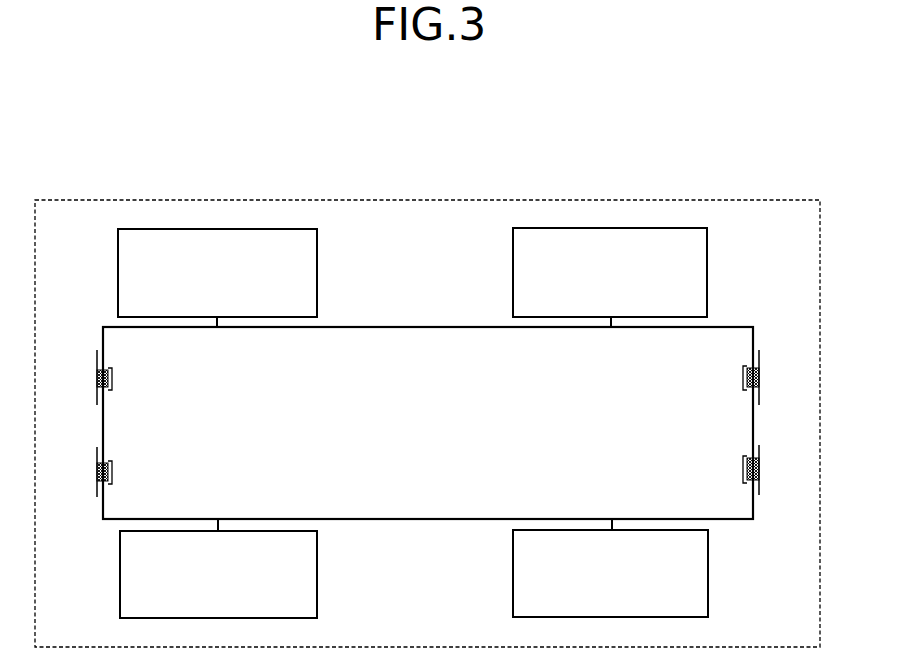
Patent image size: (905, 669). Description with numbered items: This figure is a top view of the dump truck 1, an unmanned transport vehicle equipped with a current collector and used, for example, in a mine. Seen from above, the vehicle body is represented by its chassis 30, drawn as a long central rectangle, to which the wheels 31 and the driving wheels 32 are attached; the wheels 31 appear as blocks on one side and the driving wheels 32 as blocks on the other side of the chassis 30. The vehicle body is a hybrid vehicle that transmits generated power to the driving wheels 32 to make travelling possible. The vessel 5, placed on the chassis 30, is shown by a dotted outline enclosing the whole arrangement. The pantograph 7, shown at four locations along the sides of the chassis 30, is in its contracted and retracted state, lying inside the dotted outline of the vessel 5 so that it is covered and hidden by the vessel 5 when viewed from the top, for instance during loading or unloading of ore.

The dump truck 1 is at (581, 147).
The vessel 5 is at (724, 199).
The pantograph 7 is at (95, 377).
The chassis 30 is at (460, 327).
The wheels 31 is at (317, 272).
The driving wheels 32 is at (707, 275).